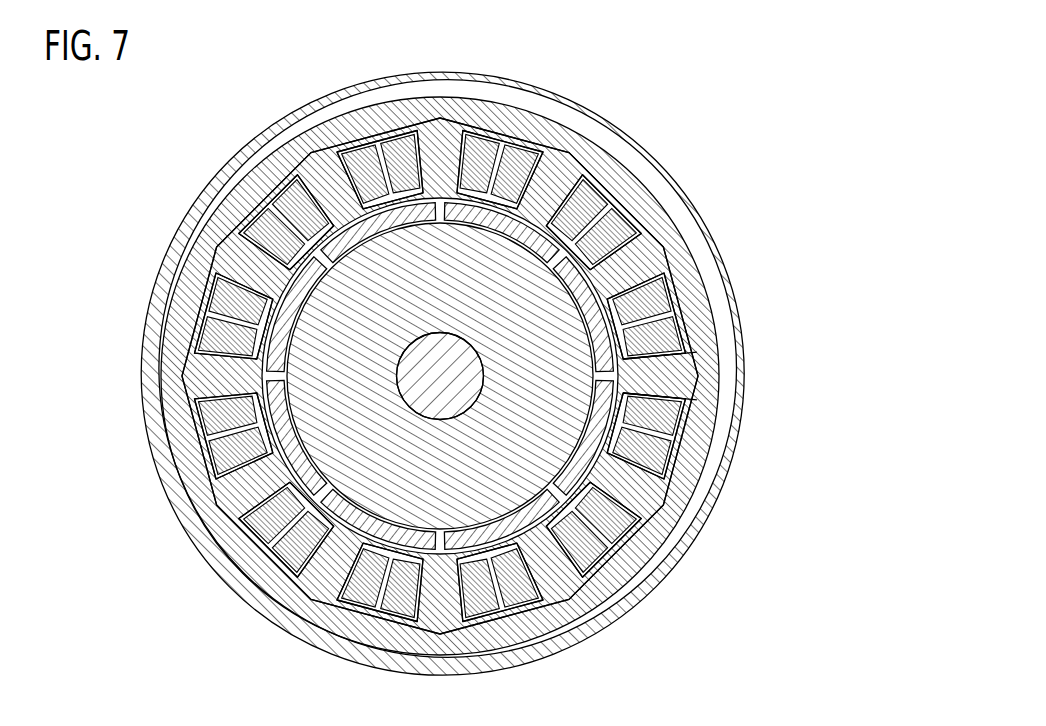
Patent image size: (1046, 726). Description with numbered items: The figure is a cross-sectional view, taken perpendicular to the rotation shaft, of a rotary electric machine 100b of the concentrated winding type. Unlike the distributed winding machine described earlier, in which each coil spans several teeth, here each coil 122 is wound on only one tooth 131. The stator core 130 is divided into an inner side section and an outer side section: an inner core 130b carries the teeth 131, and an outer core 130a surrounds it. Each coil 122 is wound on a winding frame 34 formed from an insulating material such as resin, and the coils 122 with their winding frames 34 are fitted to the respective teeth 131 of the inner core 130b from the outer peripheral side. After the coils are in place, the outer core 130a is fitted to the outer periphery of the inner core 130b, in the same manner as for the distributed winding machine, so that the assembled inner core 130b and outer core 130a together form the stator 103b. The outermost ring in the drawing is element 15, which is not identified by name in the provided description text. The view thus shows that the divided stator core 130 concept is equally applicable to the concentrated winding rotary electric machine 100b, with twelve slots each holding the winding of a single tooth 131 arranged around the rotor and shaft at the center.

The rotary electric machine 100b is at (503, 373).
The housing 15 is at (620, 568).
The stator 103b is at (658, 222).
The coil 122 is at (693, 460).
The winding frame 34 is at (685, 403).
The stator core 130 is at (578, 376).
The outer core 130a is at (658, 418).
The inner core 130b is at (665, 490).
The tooth 131 is at (640, 505).